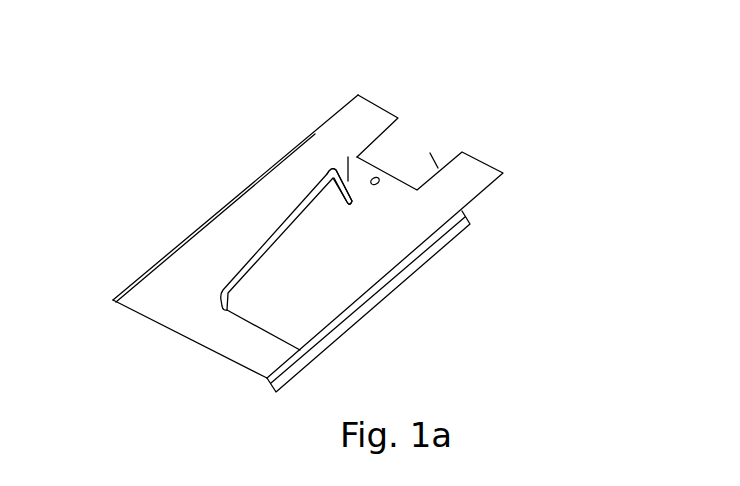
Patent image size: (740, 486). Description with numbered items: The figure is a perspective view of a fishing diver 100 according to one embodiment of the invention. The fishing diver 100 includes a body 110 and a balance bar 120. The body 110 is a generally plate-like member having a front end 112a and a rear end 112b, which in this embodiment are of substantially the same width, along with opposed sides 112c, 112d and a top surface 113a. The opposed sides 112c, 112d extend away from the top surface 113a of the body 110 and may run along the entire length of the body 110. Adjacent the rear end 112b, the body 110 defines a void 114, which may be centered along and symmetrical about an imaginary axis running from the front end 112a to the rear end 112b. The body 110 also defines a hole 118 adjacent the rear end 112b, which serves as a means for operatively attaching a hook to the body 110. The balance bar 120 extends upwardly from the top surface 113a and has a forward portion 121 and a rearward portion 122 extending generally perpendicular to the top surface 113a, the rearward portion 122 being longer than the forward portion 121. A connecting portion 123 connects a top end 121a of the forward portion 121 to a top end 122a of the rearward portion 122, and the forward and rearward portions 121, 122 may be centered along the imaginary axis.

The fishing diver 100 is at (542, 70).
The body 110 is at (492, 165).
The front end 112a is at (144, 313).
The rear end 112b is at (374, 102).
The side 112c is at (412, 277).
The side 112d is at (140, 275).
The top surface 113a is at (332, 288).
The void 114 is at (430, 153).
The hole 118 is at (380, 178).
The balance bar 120 is at (269, 234).
The forward portion 121 is at (223, 308).
The top end of the forward portion 121a is at (300, 350).
The rearward portion 122 is at (348, 157).
The top end of the rearward portion 122a is at (325, 200).
The connecting portion 123 is at (253, 253).